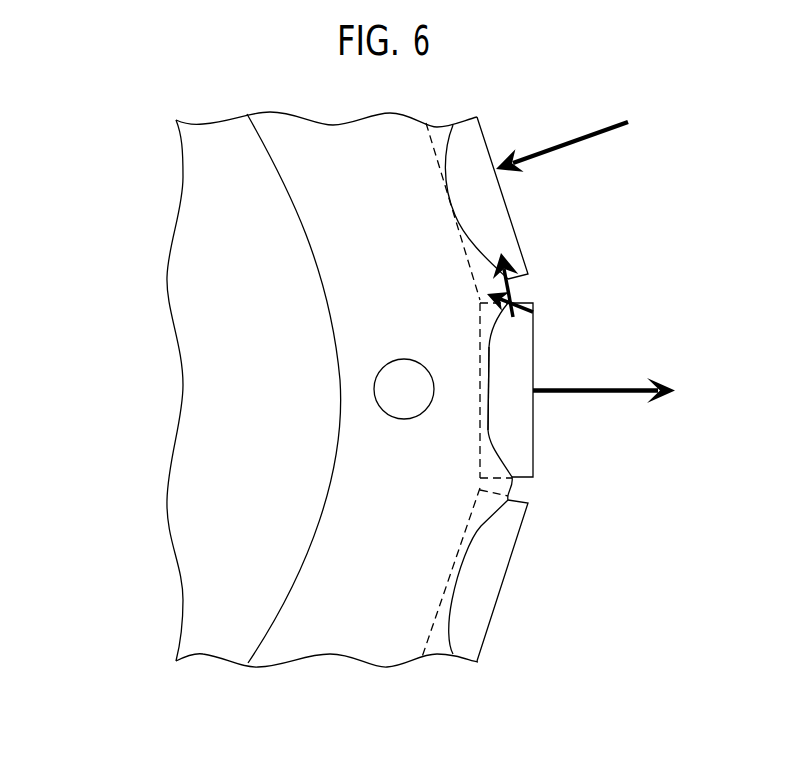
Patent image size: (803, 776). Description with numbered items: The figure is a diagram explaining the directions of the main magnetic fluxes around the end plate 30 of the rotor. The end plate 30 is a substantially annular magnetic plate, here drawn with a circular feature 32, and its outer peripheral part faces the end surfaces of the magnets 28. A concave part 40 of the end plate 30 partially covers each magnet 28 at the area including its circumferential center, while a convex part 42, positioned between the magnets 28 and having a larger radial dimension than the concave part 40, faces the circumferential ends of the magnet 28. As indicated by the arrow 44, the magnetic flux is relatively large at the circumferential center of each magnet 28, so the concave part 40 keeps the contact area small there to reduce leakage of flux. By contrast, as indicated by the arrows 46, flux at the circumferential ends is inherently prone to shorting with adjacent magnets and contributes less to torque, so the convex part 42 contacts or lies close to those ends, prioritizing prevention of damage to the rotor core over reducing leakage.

The magnet 28 is at (493, 203).
The end plate 30 is at (360, 503).
The hole 32 is at (404, 390).
The concave part 40 is at (490, 410).
The convex part 42 is at (508, 493).
The arrow 44 is at (613, 130).
The arrows 46 is at (507, 260).